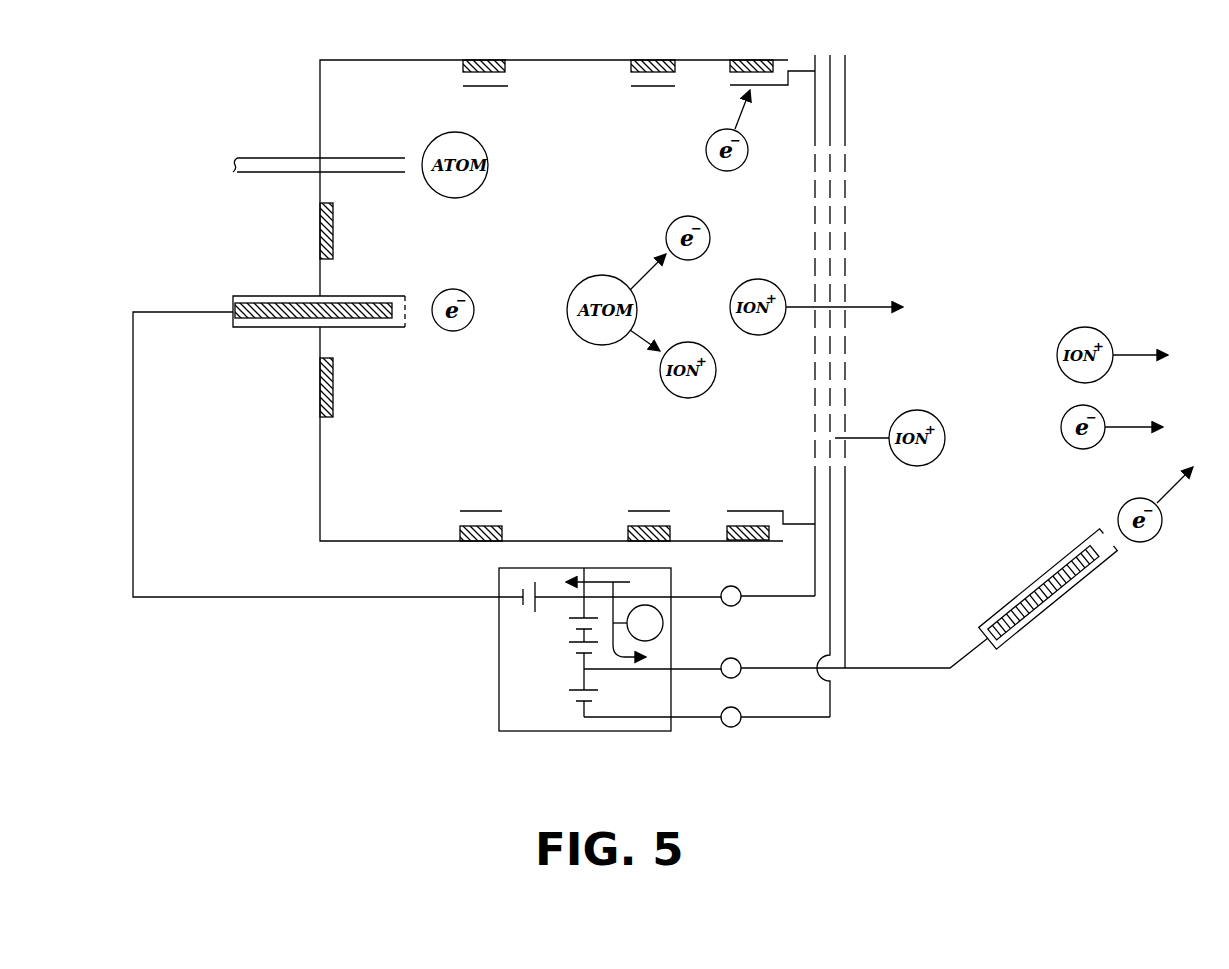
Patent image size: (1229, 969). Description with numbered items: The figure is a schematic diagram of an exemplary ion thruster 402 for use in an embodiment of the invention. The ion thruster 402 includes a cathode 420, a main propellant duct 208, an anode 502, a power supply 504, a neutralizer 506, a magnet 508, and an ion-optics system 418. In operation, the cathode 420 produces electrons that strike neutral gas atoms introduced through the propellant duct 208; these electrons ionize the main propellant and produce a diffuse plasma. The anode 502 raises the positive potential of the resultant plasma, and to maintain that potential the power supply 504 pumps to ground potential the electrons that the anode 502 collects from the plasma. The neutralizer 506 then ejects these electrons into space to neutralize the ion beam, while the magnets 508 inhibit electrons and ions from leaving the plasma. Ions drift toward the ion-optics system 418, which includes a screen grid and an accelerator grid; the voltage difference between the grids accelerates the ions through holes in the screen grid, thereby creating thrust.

The ion thruster 402 is at (205, 85).
The main propellant duct 208 is at (258, 158).
The cathode 420 is at (258, 296).
The magnet 508 is at (630, 60).
The anode 502 is at (746, 85).
The ion-optics system 418 is at (849, 54).
The power supply 504 is at (499, 697).
The neutralizer 506 is at (1040, 618).